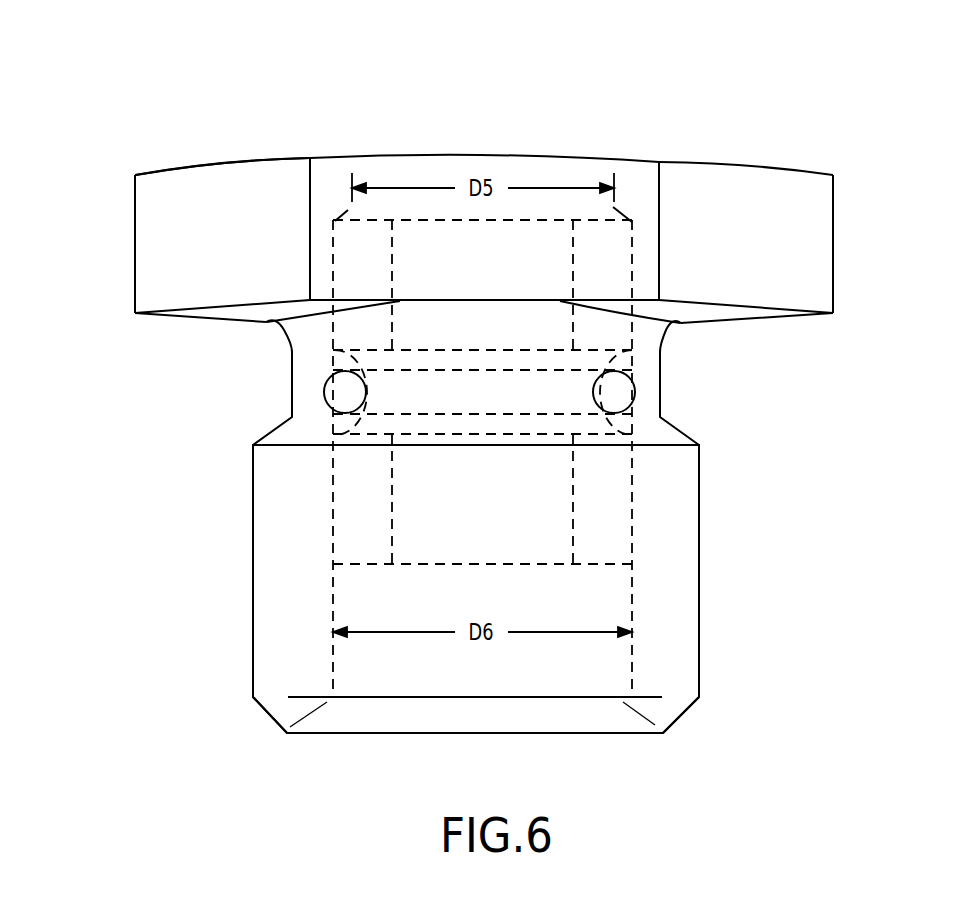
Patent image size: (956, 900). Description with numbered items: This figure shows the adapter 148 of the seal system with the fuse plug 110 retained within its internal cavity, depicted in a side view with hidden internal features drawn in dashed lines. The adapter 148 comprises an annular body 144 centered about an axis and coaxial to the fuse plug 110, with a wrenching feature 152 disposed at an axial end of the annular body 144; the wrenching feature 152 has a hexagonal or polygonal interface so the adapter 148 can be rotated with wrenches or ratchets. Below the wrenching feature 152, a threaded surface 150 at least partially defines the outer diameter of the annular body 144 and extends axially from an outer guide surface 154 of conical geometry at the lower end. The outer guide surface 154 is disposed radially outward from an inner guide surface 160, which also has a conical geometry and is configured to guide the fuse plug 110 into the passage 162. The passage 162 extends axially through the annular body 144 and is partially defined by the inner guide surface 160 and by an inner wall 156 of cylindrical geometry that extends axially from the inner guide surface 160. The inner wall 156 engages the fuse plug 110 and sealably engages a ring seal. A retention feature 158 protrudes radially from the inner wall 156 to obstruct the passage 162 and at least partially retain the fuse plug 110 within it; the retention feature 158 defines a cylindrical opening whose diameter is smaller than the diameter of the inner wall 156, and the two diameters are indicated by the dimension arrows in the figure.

The adapter 148 is at (170, 167).
The wrenching feature 152 is at (172, 235).
The retention feature 158 is at (340, 214).
The annular body 144 is at (650, 398).
The inner wall 156 is at (333, 506).
The fuse plug 110 is at (548, 485).
The threaded surface 150 is at (275, 595).
The passage 162 is at (600, 675).
The outer guide surface 154 is at (268, 715).
The inner guide surface 160 is at (637, 703).